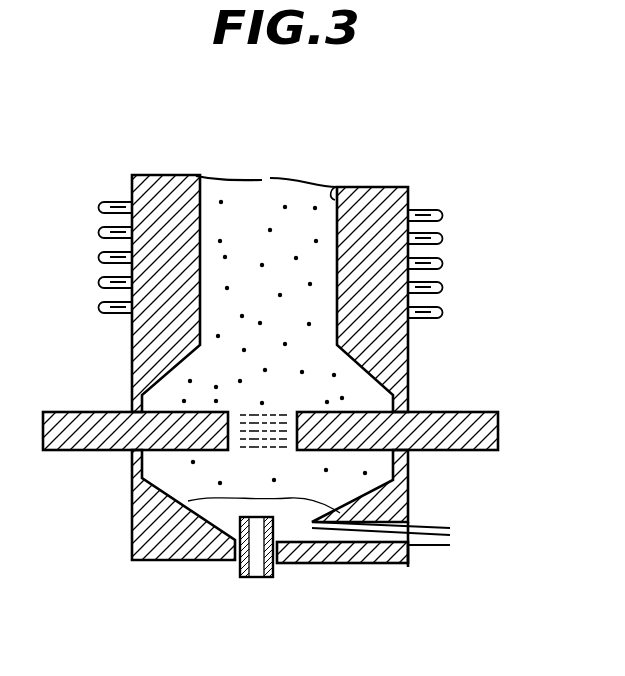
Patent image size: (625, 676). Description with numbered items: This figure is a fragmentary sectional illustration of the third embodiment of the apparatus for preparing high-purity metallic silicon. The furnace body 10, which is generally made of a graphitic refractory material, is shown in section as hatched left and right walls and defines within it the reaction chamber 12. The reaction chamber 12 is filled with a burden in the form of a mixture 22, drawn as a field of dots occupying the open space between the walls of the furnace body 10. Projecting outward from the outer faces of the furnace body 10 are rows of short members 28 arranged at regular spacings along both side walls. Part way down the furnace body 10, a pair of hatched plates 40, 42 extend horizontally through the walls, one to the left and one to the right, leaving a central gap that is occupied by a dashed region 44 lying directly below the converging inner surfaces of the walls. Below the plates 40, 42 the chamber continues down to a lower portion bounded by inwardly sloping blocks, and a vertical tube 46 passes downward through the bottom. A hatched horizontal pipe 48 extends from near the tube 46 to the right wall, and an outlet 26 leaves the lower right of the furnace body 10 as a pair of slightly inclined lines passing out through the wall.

The furnace body 10 is at (388, 185).
The reaction chamber 12 is at (331, 196).
The mixture 22 is at (254, 205).
The outlet pipe 26 is at (450, 537).
The heating elements 28 is at (443, 238).
The left support plate 40 is at (75, 412).
The right support plate 42 is at (470, 412).
The screen 44 is at (270, 412).
The drain tube 46 is at (240, 590).
The bottom pipe 48 is at (316, 562).